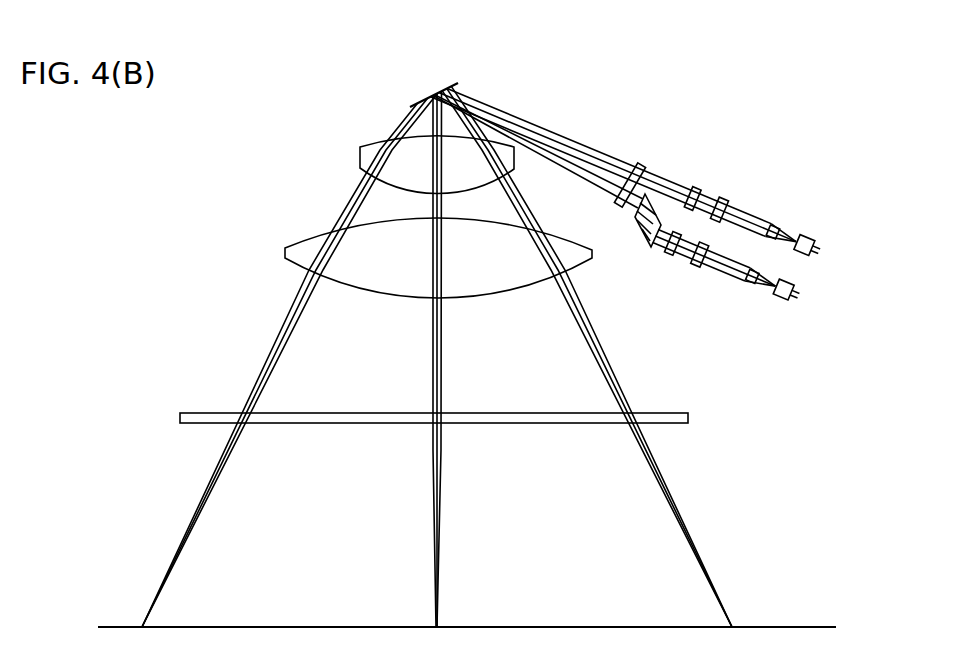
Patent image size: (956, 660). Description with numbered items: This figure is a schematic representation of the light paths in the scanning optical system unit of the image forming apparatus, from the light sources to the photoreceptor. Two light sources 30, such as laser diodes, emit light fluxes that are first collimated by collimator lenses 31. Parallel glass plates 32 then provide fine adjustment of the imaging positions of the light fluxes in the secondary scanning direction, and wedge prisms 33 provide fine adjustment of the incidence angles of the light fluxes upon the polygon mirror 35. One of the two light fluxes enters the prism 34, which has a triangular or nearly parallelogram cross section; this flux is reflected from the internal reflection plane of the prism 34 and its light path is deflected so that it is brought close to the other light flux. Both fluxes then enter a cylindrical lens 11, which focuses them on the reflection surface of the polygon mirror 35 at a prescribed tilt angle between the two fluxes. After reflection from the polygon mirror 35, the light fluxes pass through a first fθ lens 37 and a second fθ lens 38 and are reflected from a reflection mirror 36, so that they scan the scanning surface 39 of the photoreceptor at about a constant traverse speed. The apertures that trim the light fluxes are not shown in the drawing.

The cylindrical lens 11 is at (638, 164).
The light sources 30 is at (810, 256).
The collimator lenses 31 is at (775, 227).
The parallel glass plates 32 is at (725, 200).
The wedge prisms 33 is at (694, 189).
The prism 34 is at (636, 219).
The polygon mirror 35 is at (446, 84).
The reflection mirror 36 is at (690, 418).
The first fθ lens 37 is at (360, 152).
The second fθ lens 38 is at (285, 252).
The scanning surface 39 is at (106, 627).